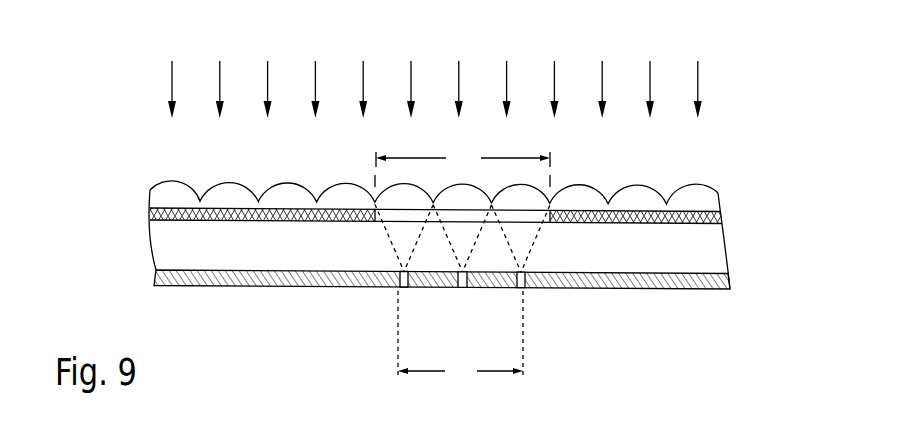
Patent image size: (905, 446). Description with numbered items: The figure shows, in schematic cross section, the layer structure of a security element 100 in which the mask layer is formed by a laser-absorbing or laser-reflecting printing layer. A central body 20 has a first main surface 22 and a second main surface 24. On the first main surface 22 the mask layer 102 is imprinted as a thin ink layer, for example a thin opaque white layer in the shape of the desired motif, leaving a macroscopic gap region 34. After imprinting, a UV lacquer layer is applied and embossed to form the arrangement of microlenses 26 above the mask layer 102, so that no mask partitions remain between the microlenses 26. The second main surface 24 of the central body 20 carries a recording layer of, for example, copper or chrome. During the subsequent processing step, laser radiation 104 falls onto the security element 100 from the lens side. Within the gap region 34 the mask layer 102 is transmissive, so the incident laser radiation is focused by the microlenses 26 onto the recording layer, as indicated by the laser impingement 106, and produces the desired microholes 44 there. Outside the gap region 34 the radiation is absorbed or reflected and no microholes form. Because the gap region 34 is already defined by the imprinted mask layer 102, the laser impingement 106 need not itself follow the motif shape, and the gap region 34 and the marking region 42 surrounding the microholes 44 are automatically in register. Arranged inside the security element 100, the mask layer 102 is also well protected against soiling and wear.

The security element 100 is at (422, 222).
The laser radiation 104 is at (698, 82).
The second main surface 24 is at (434, 200).
The microlenses 26 is at (696, 197).
The gap region 34 is at (462, 165).
The mask layer 102 is at (718, 216).
The central body 20 is at (718, 255).
The laser impingement 106 is at (530, 250).
The microholes 44 is at (462, 288).
The marking region 42 is at (460, 339).
The first main surface 22 is at (442, 285).